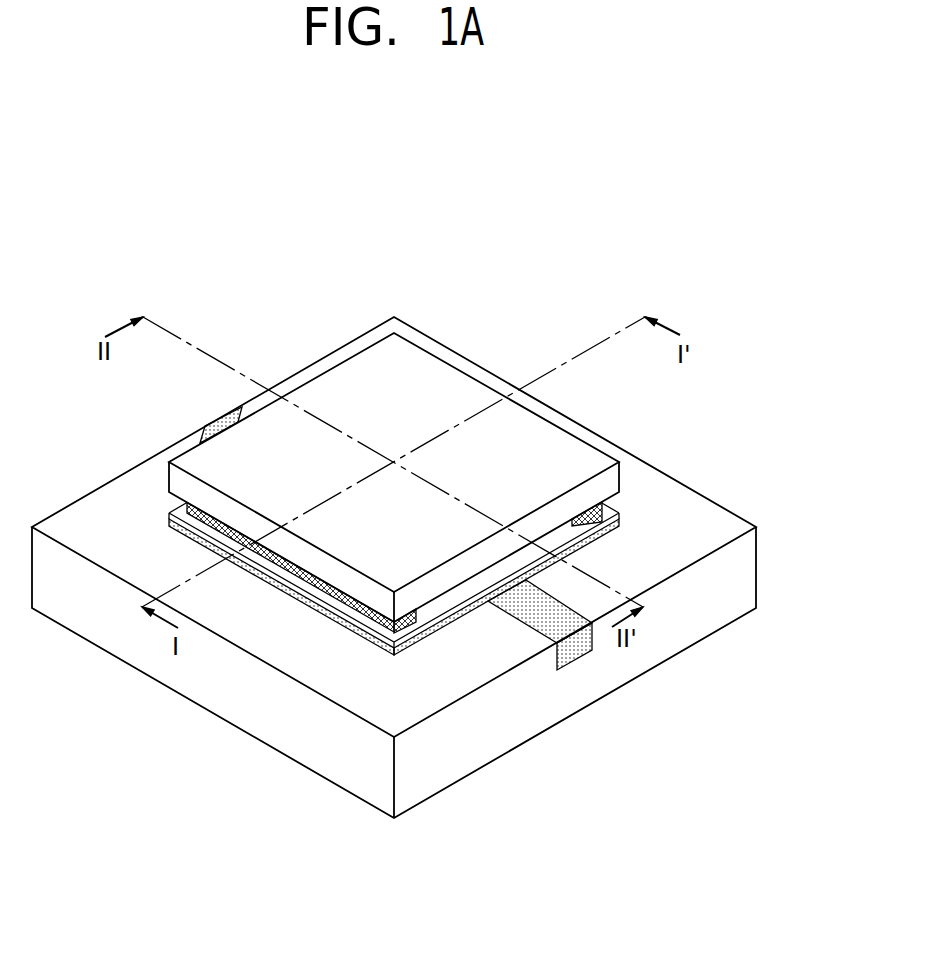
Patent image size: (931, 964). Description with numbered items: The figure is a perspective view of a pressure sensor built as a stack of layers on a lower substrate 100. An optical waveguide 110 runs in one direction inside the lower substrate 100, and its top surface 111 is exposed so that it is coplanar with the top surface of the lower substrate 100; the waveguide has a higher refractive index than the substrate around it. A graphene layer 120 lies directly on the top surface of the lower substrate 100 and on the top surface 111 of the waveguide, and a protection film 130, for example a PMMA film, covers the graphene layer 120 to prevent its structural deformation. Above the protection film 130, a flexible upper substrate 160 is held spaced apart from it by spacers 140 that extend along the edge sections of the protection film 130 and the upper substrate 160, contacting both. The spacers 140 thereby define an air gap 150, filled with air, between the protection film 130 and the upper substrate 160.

The lower substrate 100 is at (740, 575).
The optical waveguide 110 is at (568, 647).
The top surface of the optical waveguide 111 is at (593, 627).
The graphene layer 120 is at (616, 530).
The protection film 130 is at (613, 516).
The spacers 140 is at (608, 510).
The air gap 150 is at (433, 608).
The upper substrate 160 is at (422, 373).